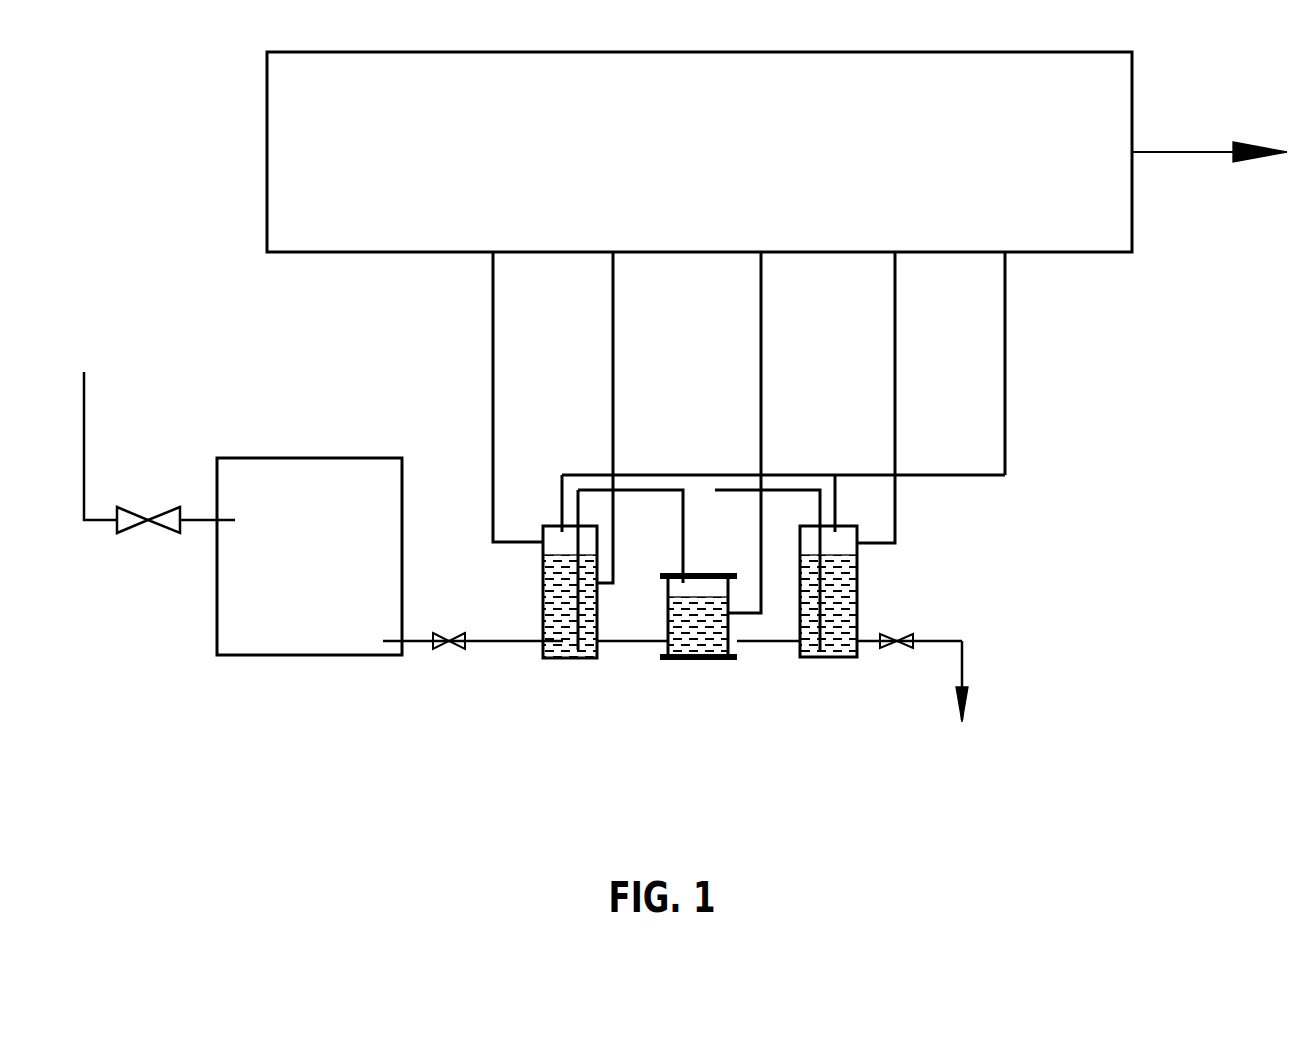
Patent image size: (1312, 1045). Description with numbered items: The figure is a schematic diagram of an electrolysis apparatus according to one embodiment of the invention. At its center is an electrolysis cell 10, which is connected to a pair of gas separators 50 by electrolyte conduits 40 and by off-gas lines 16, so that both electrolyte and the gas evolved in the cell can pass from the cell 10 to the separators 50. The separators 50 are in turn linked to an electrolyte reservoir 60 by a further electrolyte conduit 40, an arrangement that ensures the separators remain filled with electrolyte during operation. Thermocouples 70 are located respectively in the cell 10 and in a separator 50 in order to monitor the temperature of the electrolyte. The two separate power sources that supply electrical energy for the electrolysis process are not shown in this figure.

The electrolysis cell 10 is at (698, 640).
The off-gas lines 16 is at (575, 500).
The electrolyte conduits 40 is at (485, 641).
The gas separators 50 is at (563, 641).
The electrolyte reservoir 60 is at (310, 635).
The thermocouples 70 is at (613, 368).